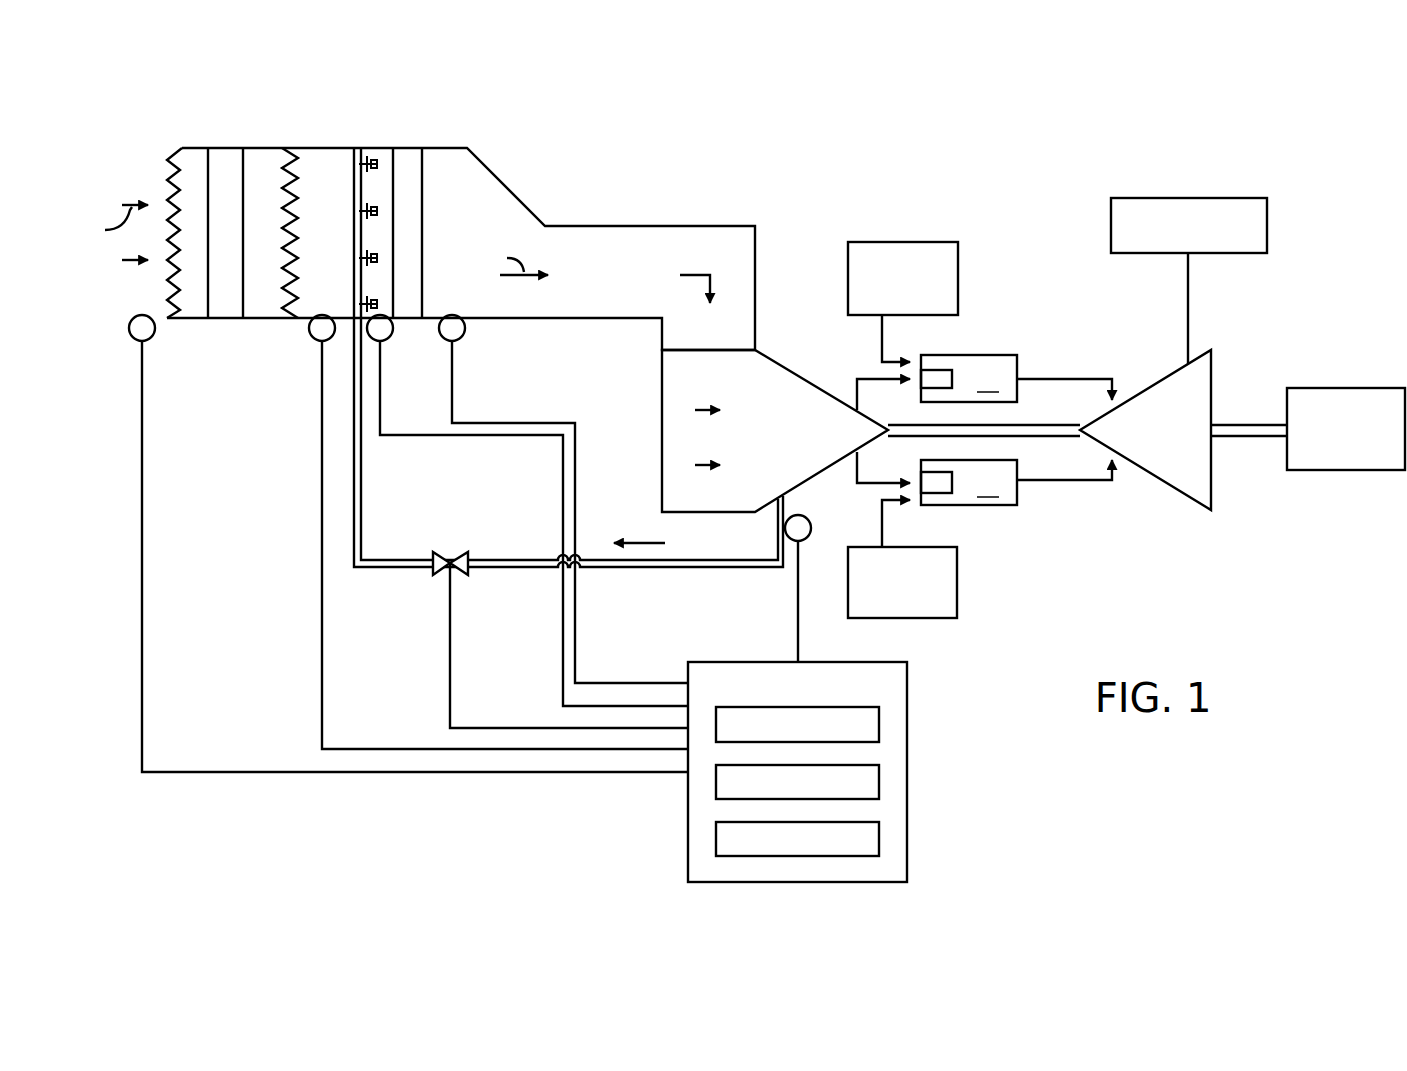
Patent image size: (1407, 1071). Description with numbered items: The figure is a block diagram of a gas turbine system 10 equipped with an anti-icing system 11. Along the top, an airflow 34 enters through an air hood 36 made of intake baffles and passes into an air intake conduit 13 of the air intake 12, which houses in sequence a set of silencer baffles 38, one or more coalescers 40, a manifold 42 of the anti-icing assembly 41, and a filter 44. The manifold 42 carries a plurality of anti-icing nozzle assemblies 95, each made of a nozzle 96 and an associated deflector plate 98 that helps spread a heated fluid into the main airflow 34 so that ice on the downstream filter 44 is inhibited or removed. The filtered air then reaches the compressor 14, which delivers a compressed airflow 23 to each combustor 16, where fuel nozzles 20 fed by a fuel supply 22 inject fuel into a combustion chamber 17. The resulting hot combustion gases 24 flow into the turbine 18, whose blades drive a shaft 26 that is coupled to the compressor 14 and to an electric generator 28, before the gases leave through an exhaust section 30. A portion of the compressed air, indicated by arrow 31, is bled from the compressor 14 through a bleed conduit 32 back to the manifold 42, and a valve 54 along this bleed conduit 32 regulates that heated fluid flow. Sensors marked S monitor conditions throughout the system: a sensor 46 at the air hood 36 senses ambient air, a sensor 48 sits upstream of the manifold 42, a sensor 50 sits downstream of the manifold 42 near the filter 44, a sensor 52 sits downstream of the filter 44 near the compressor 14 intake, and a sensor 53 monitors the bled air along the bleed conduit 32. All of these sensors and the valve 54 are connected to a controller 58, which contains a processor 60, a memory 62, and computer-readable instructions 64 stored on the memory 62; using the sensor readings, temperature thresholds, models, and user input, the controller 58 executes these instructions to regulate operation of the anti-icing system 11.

The gas turbine system 10 is at (163, 92).
The anti-icing system 11 is at (400, 790).
The air intake 12 is at (530, 112).
The air intake conduit 13 is at (512, 190).
The compressor 14 is at (780, 362).
The combustor 16 is at (977, 355).
The combustion chamber 17 is at (987, 433).
The turbine 18 is at (1177, 490).
The fuel nozzle 20 is at (944, 369).
The fuel supply 22 is at (906, 242).
The compressed airflow 23 is at (870, 372).
The combustion gases 24 is at (1068, 378).
The shaft 26 is at (1028, 424).
The electric generator 28 is at (1345, 388).
The exhaust section 30 is at (1190, 198).
The heated fluid flow 31 is at (640, 535).
The bleed conduit 32 is at (747, 570).
The airflow 34 is at (311, 240).
The air hood 36 is at (170, 148).
The silencer baffles 38 is at (224, 153).
The coalescer 40 is at (285, 155).
The anti-icing assembly 41 is at (380, 222).
The manifold 42 is at (355, 147).
The filter 44 is at (408, 157).
The sensor 46 is at (162, 341).
The sensor 48 is at (302, 341).
The sensor 50 is at (397, 341).
The sensor 52 is at (470, 341).
The sensor 53 is at (812, 540).
The valve 54 is at (460, 574).
The controller 58 is at (907, 688).
The processor 60 is at (880, 725).
The memory 62 is at (880, 782).
The computer-readable instructions 64 is at (880, 840).
The anti-icing nozzle assembly 95 is at (358, 130).
The nozzle 96 is at (374, 160).
The deflector plate 98 is at (366, 158).